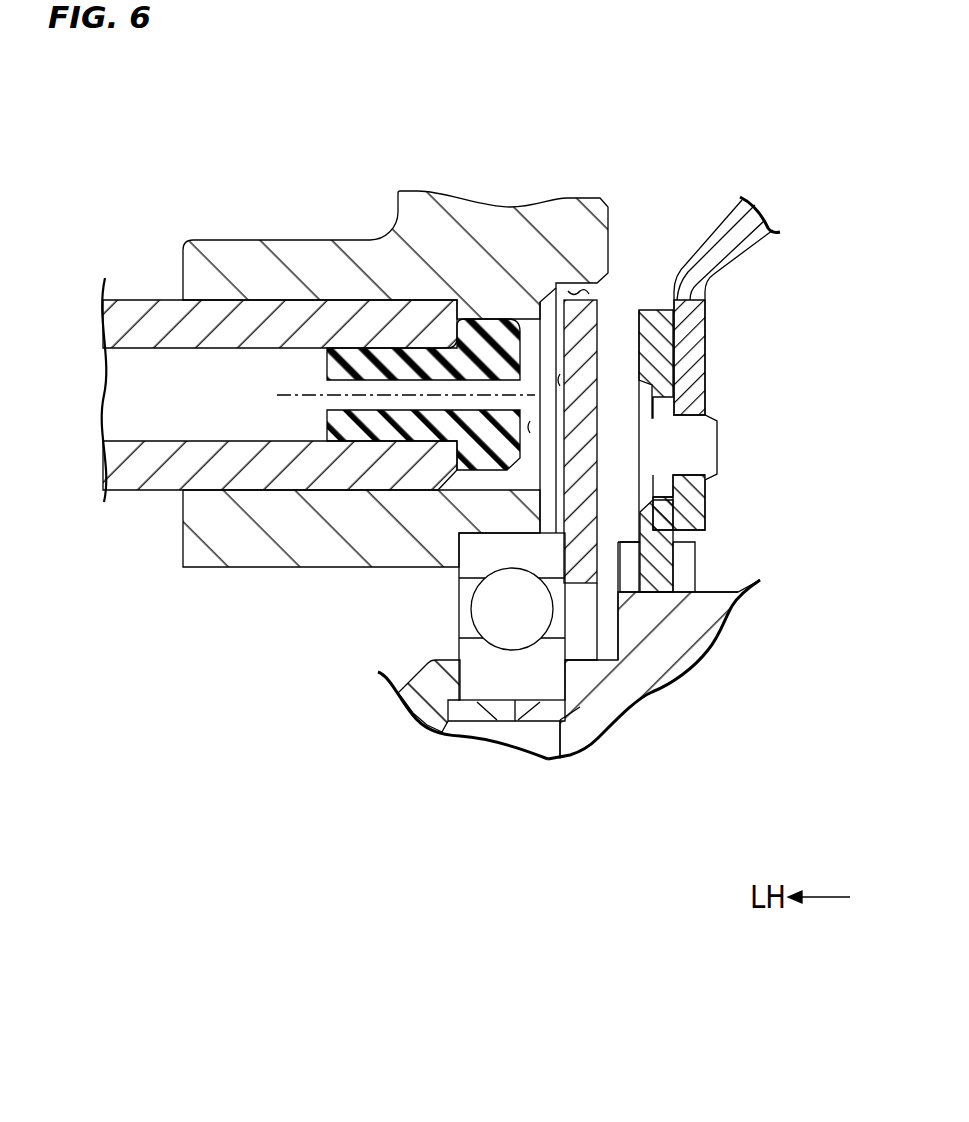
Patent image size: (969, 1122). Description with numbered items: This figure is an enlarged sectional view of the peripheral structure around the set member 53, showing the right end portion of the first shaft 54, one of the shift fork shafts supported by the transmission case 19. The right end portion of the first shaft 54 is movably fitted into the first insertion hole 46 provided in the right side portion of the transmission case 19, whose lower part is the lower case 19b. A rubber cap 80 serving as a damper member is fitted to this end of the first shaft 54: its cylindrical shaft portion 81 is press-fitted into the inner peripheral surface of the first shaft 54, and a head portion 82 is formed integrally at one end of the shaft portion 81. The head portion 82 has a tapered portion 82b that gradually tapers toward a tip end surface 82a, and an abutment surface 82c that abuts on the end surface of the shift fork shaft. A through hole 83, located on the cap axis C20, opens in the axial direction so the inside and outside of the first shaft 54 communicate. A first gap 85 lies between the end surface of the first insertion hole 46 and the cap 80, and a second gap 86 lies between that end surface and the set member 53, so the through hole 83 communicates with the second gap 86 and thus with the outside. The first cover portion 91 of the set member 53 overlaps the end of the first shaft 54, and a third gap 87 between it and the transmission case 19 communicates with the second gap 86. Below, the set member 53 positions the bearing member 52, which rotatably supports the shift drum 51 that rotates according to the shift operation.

The transmission case 19 is at (466, 332).
The lower case 19b is at (608, 215).
The first shaft 54 is at (143, 298).
The cap axis C20 is at (297, 393).
The cap 80 is at (543, 353).
The shaft portion 81 is at (342, 348).
The head portion 82 is at (543, 353).
The tip end surface 82a is at (533, 344).
The tapered portion 82b is at (520, 462).
The abutment surface 82c is at (403, 256).
The through hole 83 is at (563, 520).
The first gap 85 is at (530, 427).
The second gap 86 is at (560, 380).
The third gap 87 is at (590, 290).
The first cover portion 91 is at (597, 342).
The set member 53 is at (691, 415).
The first insertion hole 46 is at (500, 476).
The shift drum 51 is at (422, 672).
The bearing member 52 is at (552, 687).